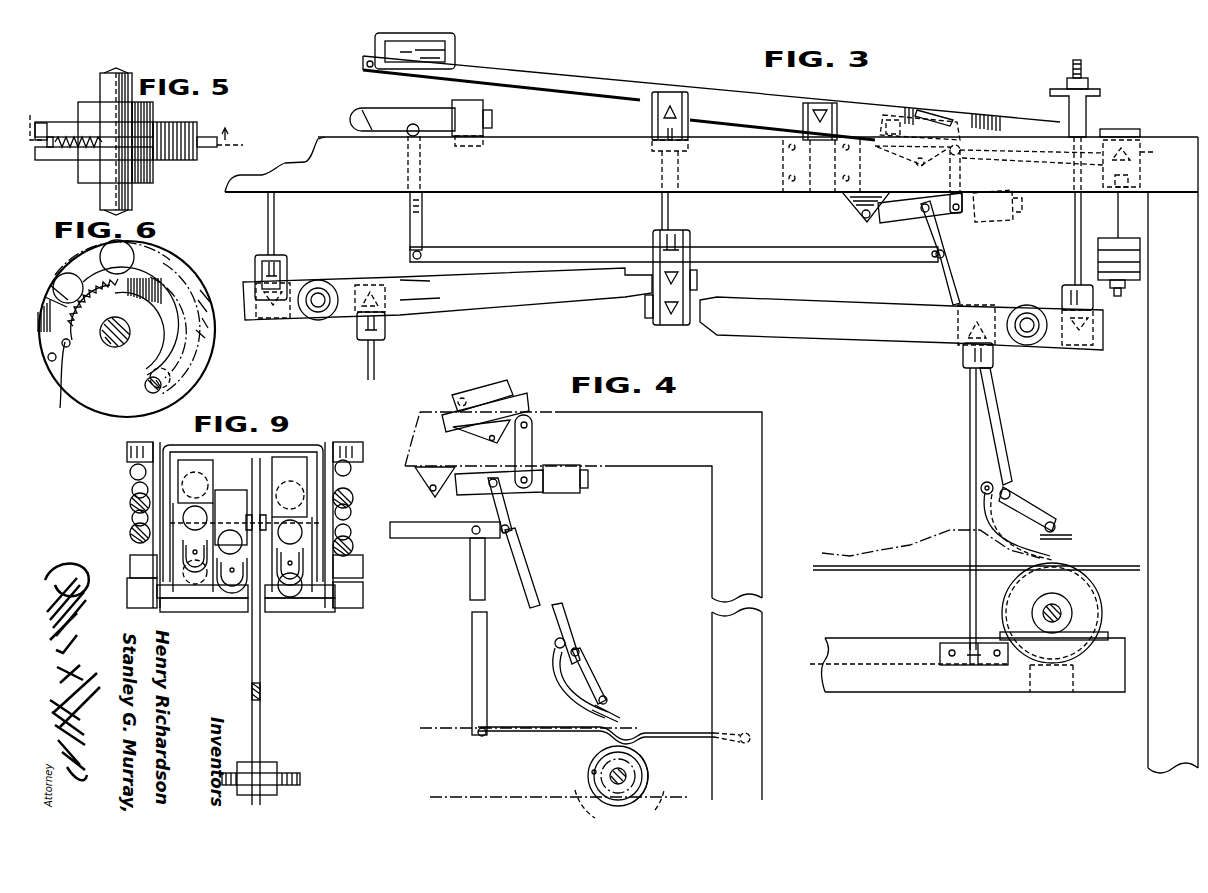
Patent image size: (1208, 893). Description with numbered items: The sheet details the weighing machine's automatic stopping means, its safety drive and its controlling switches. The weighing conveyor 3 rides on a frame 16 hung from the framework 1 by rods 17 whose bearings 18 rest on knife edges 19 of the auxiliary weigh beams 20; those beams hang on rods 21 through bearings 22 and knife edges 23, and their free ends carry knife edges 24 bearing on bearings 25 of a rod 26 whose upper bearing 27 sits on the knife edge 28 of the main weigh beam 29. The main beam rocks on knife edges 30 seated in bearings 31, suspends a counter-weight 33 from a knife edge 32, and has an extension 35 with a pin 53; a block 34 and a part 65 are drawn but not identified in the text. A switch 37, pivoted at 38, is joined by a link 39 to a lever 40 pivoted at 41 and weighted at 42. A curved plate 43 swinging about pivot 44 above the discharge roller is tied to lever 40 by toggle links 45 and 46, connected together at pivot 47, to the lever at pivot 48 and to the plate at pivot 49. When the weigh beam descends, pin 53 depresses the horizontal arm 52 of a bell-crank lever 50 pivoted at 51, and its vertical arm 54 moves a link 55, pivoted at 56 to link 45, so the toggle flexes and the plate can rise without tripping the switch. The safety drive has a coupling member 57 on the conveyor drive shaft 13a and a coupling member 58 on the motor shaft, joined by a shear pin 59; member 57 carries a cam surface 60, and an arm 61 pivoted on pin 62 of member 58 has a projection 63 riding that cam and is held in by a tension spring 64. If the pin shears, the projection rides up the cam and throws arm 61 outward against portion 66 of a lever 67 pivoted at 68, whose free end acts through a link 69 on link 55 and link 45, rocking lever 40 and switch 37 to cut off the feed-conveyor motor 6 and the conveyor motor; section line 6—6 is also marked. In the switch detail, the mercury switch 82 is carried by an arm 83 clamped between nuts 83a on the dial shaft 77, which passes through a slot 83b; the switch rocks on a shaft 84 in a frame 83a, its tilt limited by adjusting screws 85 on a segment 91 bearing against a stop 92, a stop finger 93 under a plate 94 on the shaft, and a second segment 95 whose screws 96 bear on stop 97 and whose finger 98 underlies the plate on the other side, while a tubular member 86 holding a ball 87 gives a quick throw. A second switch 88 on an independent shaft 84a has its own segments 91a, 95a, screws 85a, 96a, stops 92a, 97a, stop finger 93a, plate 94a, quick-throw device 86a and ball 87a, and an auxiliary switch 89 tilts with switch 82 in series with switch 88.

In FIG. 3, the framework 1 is at (553, 152).
In FIG. 4, the framework 1 is at (748, 423).
In FIG. 3, the weighing conveyor 3 is at (867, 571).
In FIG. 4, the weighing conveyor 3 is at (450, 728).
In FIG. 5, the electric motor 6 is at (141, 126).
In FIG. 3, the drive shaft 13a is at (1064, 612).
In FIG. 4, the drive shaft 13a is at (610, 778).
In FIG. 5, the drive shaft 13a is at (126, 70).
In FIG. 6, the drive shaft 13a is at (112, 349).
In FIG. 3, the frame 16 is at (890, 693).
In FIG. 4, the frame 16 is at (509, 797).
In FIG. 3, the rods 17 is at (376, 371).
In FIG. 3, the bearings 18 is at (382, 284).
In FIG. 3, the knife edges 19 is at (362, 326).
In FIG. 3, the auxiliary weigh beams 20 is at (478, 302).
In FIG. 3, the rods 21 is at (274, 216).
In FIG. 3, the bearings 22 is at (270, 320).
In FIG. 3, the knife edges 23 is at (282, 278).
In FIG. 3, the knife edges 24 is at (692, 290).
In FIG. 3, the bearings 25 is at (652, 313).
In FIG. 3, the rod 26 is at (670, 212).
In FIG. 3, the bearing 27 is at (674, 94).
In FIG. 3, the knife edge 28 is at (655, 120).
In FIG. 3, the main weigh beam 29 is at (753, 104).
In FIG. 3, the knife edge 30 is at (828, 112).
In FIG. 3, the bearing 31 is at (858, 106).
In FIG. 3, the knife edge 32 is at (1067, 163).
In FIG. 3, the counter-weight 33 is at (1106, 238).
In FIG. 3, the block 34 is at (455, 40).
In FIG. 3, the extension 35 is at (557, 74).
In FIG. 3, the switch 37 is at (946, 110).
In FIG. 4, the switch 37 is at (495, 400).
In FIG. 3, the pivot 38 is at (920, 168).
In FIG. 4, the pivot 38 is at (481, 437).
In FIG. 3, the link 39 is at (963, 195).
In FIG. 4, the link 39 is at (532, 450).
In FIG. 3, the lever 40 is at (905, 216).
In FIG. 4, the lever 40 is at (467, 493).
In FIG. 3, the pivot 41 is at (866, 220).
In FIG. 4, the pivot 41 is at (427, 493).
In FIG. 3, the weight 42 is at (1003, 220).
In FIG. 4, the weight 42 is at (568, 491).
In FIG. 3, the plate 43 is at (1052, 556).
In FIG. 4, the plate 43 is at (565, 690).
In FIG. 3, the pivot 44 is at (981, 490).
In FIG. 4, the pivot 44 is at (554, 644).
In FIG. 3, the link 45 is at (1000, 438).
In FIG. 4, the link 45 is at (533, 592).
In FIG. 3, the link 46 is at (1030, 511).
In FIG. 4, the link 46 is at (590, 683).
In FIG. 3, the pivot 47 is at (1010, 489).
In FIG. 4, the pivot 47 is at (580, 653).
In FIG. 3, the pivot 48 is at (937, 226).
In FIG. 4, the pivot 48 is at (510, 501).
In FIG. 3, the pivot 49 is at (1057, 531).
In FIG. 4, the pivot 49 is at (609, 704).
In FIG. 3, the bell-crank lever 50 is at (406, 110).
In FIG. 3, the pivot 51 is at (411, 137).
In FIG. 3, the horizontal arm 52 is at (352, 121).
In FIG. 3, the pin 53 is at (366, 63).
In FIG. 3, the vertical arm 54 is at (422, 224).
In FIG. 3, the link 55 is at (590, 254).
In FIG. 4, the link 55 is at (450, 539).
In FIG. 3, the pivot 56 is at (936, 259).
In FIG. 4, the pivot 56 is at (500, 537).
In FIG. 5, the coupling member 57 is at (197, 126).
In FIG. 6, the coupling member 57 is at (93, 414).
In FIG. 4, the coupling member 58 is at (600, 768).
In FIG. 5, the coupling member 58 is at (186, 161).
In FIG. 4, the driving pin 59 is at (591, 772).
In FIG. 5, the driving pin 59 is at (44, 162).
In FIG. 6, the driving pin 59 is at (50, 362).
In FIG. 5, the cam surface 60 is at (155, 128).
In FIG. 6, the cam surface 60 is at (165, 290).
In FIG. 4, the arm 61 is at (648, 778).
In FIG. 5, the arm 61 is at (210, 148).
In FIG. 6, the arm 61 is at (207, 332).
In FIG. 6, the pin 62 is at (156, 398).
In FIG. 5, the lateral projection 63 is at (108, 125).
In FIG. 6, the lateral projection 63 is at (88, 272).
In FIG. 5, the tension spring 64 is at (70, 135).
In FIG. 6, the tension spring 64 is at (90, 337).
In FIG. 5, the pawl 65 is at (62, 162).
In FIG. 6, the pawl 65 is at (62, 400).
In FIG. 4, the portion 66 is at (625, 731).
In FIG. 4, the lever 67 is at (683, 733).
In FIG. 4, the pivot 68 is at (740, 742).
In FIG. 4, the link 69 is at (475, 637).
In FIG. 9, the dial shaft 77 is at (296, 774).
In FIG. 9, the switch 82 is at (186, 570).
In FIG. 9, the arm 83 is at (252, 674).
In FIG. 9, the nuts 83a is at (264, 766).
In FIG. 9, the longitudinal slot 83b is at (261, 692).
In FIG. 9, the shaft 84 is at (222, 515).
In FIG. 9, the shaft 84a is at (284, 578).
In FIG. 9, the adjusting screws 85 is at (130, 537).
In FIG. 9, the adjusting screws 85a is at (353, 546).
In FIG. 9, the tubular member 86 is at (185, 458).
In FIG. 9, the quick-throw device 86a is at (298, 447).
In FIG. 9, the ball 87 is at (200, 468).
In FIG. 9, the ball 87a is at (305, 482).
In FIG. 9, the second switch 88 is at (290, 598).
In FIG. 9, the auxiliary switch 89 is at (240, 510).
In FIG. 9, the segment 91 is at (133, 566).
In FIG. 9, the segment 91a is at (358, 568).
In FIG. 9, the stop 92 is at (130, 598).
In FIG. 9, the stop 92a is at (348, 608).
In FIG. 9, the stop finger 93 is at (183, 612).
In FIG. 9, the stop finger 93a is at (308, 612).
In FIG. 9, the plate 94 is at (232, 582).
In FIG. 9, the plate 94a is at (300, 613).
In FIG. 9, the segment 95 is at (130, 475).
In FIG. 9, the segment 95a is at (345, 460).
In FIG. 9, the adjusting screws 96 is at (130, 503).
In FIG. 9, the adjusting screws 96a is at (353, 498).
In FIG. 9, the stop 97 is at (127, 458).
In FIG. 9, the stop 97a is at (358, 444).
In FIG. 9, the stop finger 98 is at (206, 613).